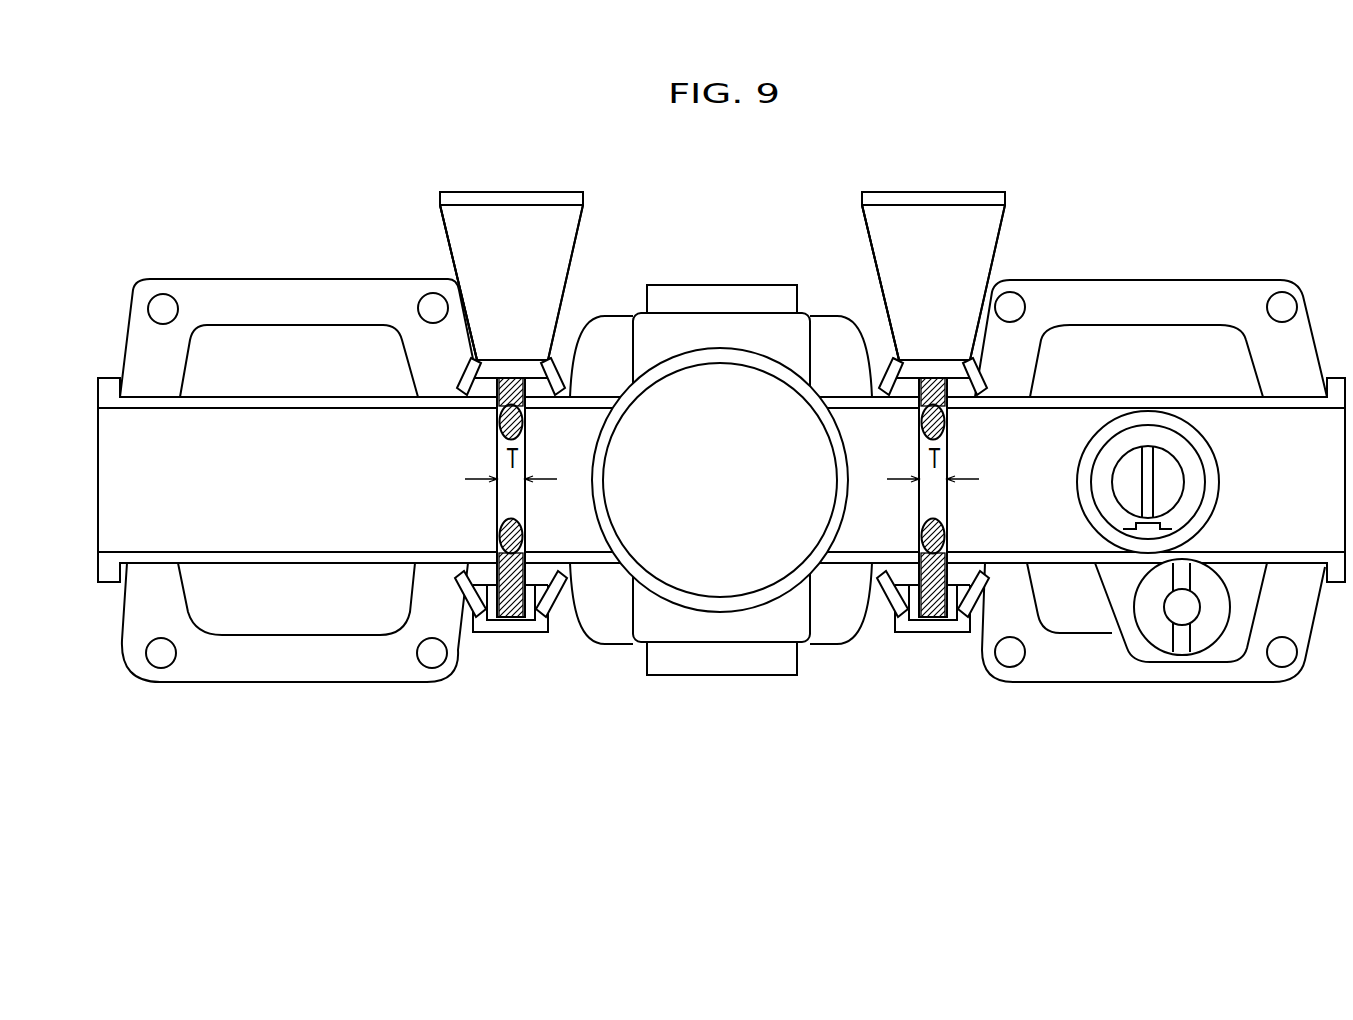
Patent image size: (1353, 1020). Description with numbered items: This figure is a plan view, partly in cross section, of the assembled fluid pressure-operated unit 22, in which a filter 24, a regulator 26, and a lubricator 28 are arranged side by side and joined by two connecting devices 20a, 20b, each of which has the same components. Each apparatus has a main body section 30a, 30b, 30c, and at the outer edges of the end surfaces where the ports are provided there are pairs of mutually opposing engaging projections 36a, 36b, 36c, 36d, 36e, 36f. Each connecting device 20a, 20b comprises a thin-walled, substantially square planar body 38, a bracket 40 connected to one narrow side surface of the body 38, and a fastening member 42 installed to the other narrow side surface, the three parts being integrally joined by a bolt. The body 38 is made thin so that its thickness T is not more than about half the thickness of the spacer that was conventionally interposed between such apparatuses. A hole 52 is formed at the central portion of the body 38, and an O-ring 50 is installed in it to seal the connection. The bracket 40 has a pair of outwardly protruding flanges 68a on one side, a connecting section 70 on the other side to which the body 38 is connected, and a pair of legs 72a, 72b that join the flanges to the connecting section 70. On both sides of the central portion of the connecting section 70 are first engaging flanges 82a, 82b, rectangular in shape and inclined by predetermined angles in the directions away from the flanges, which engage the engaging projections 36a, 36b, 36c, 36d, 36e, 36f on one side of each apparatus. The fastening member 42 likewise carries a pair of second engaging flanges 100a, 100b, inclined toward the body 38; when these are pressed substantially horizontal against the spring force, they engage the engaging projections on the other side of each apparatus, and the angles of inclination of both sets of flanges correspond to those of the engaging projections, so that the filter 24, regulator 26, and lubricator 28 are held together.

The fluid pressure-operated unit 22 is at (1220, 150).
The filter 24 is at (266, 695).
The regulator 26 is at (739, 690).
The lubricator 28 is at (1146, 695).
The main body section 30a is at (140, 617).
The main body section 30b is at (672, 641).
The main body section 30c is at (1233, 682).
The engaging projection 36a is at (116, 392).
The engaging projection 36b is at (485, 394).
The engaging projection 36c is at (537, 392).
The engaging projection 36d is at (906, 394).
The engaging projection 36e is at (960, 394).
The engaging projection 36f is at (1332, 394).
The body 38 is at (523, 634).
The bracket 40 is at (530, 187).
The fastening member 42 is at (512, 621).
The O-ring 50 is at (491, 633).
The hole 52 is at (492, 503).
The flange 68a is at (470, 193).
The connecting section 70 is at (510, 372).
The leg 72a is at (462, 225).
The leg 72b is at (669, 282).
The first engaging flange 82a is at (464, 362).
The first engaging flange 82b is at (560, 352).
The second engaging flange 100a is at (470, 620).
The second engaging flange 100b is at (554, 620).
The fluid pressure-operated apparatus-connecting device 20a is at (588, 270).
The fluid pressure-operated apparatus-connecting device 20b is at (1010, 270).